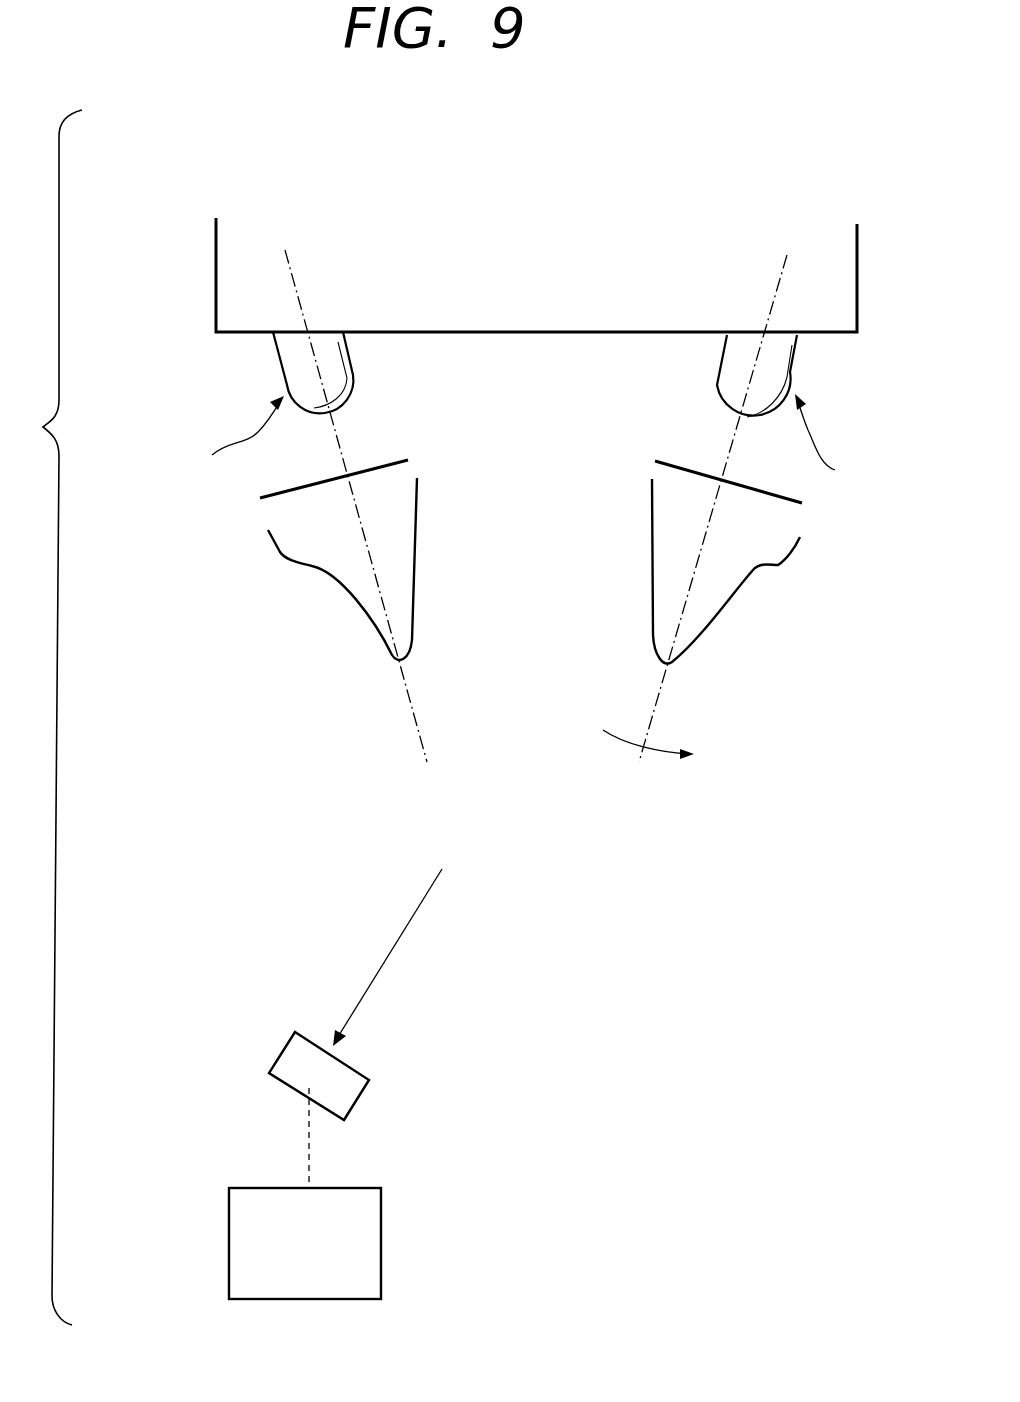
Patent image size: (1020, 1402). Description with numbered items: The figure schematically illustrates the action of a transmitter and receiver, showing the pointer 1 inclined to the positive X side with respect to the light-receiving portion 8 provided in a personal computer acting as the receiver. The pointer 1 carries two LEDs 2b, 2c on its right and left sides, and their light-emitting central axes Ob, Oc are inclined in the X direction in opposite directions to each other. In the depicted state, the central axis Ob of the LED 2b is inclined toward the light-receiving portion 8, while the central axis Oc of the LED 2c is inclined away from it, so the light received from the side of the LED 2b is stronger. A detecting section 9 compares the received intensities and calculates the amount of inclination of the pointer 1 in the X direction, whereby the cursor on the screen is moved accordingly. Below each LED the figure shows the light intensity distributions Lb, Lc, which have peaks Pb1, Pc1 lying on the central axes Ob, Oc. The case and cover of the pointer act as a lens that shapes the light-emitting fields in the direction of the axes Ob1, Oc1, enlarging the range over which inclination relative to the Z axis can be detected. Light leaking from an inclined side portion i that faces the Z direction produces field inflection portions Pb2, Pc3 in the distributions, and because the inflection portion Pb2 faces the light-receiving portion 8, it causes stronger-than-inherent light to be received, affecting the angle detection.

The pointer 1 is at (200, 276).
The LED 2b is at (287, 347).
The LED 2c is at (783, 360).
The light-emitting central axis Ob is at (340, 428).
The light-emitting central axis Oc is at (733, 445).
The axis Ob1 is at (367, 476).
The axis Oc1 is at (697, 472).
The light intensity distribution Lb is at (343, 605).
The light intensity distribution Lc is at (727, 603).
The peak Pb1 is at (393, 660).
The field inflection portion Pb2 is at (282, 555).
The peak Pc1 is at (672, 663).
The field inflection portion Pc3 is at (780, 567).
The light-receiving portion 8 is at (359, 1105).
The detecting section 9 is at (381, 1248).
The X direction X is at (683, 750).
The Z axis Z is at (395, 944).
The inclined side portion i is at (524, 442).